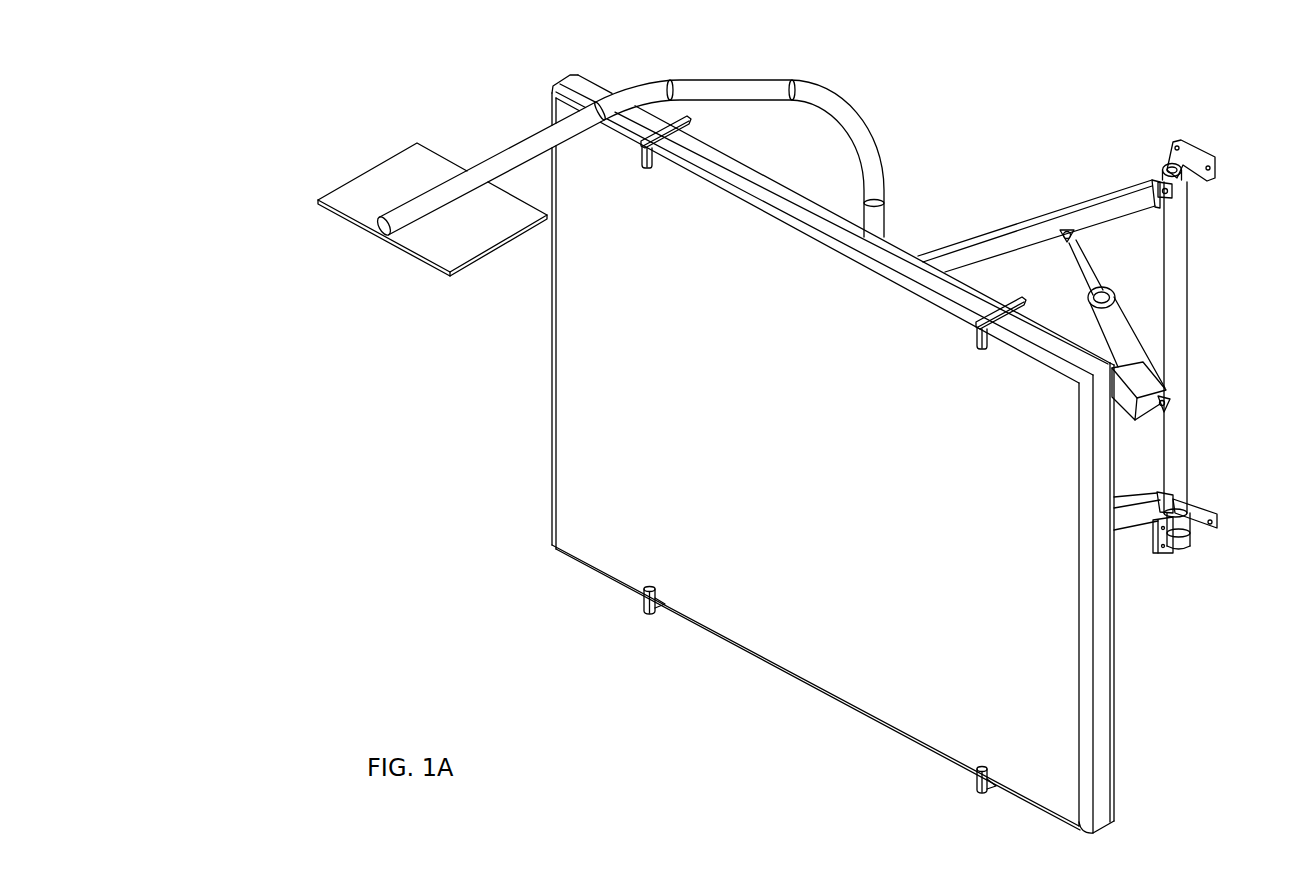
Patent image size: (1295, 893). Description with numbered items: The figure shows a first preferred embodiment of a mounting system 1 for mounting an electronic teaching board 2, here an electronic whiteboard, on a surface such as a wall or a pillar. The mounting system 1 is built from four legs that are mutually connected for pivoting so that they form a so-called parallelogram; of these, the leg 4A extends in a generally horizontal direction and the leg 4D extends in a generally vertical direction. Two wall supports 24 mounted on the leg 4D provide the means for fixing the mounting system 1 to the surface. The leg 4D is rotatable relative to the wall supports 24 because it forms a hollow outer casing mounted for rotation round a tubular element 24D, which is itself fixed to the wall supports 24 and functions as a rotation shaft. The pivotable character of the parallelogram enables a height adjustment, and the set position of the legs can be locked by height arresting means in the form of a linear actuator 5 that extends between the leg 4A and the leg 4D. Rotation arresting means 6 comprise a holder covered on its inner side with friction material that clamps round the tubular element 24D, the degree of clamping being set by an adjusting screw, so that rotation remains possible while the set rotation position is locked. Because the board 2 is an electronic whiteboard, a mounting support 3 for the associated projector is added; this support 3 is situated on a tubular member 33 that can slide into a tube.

The mounting system 1 is at (1058, 98).
The electronic teaching board 2 is at (538, 512).
The mounting support 3 is at (352, 237).
The tubular member 33 is at (682, 68).
The leg 4A is at (999, 213).
The leg 4D is at (1200, 383).
The linear actuator 5 is at (1120, 278).
The rotation arresting means 6 is at (1204, 543).
The wall support 24 is at (1223, 148).
The tubular element 24D is at (1165, 150).